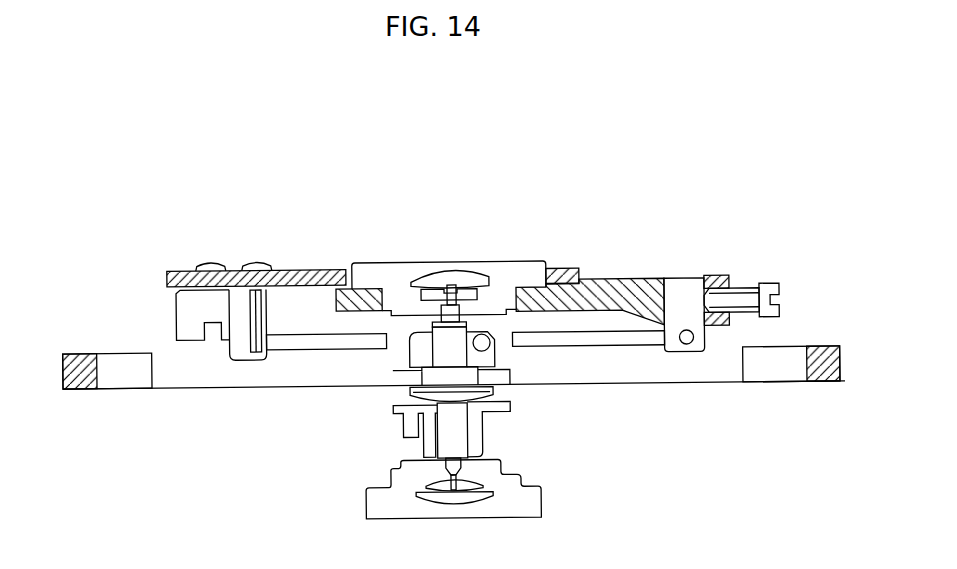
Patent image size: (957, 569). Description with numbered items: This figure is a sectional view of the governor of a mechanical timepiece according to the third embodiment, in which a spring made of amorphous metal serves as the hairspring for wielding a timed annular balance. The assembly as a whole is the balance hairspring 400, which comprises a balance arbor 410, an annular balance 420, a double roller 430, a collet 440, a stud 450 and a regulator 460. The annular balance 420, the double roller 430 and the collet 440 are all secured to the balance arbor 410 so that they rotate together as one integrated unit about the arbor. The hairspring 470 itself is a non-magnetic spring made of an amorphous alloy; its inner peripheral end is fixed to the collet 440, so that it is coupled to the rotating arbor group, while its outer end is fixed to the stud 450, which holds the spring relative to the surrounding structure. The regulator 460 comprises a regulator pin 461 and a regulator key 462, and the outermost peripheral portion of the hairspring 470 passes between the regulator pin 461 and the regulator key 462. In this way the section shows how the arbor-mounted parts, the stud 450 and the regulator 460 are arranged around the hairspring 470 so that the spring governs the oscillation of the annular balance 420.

The balance hairspring 400 is at (710, 243).
The balance arbor 410 is at (453, 303).
The annular balance 420 is at (85, 380).
The double roller 430 is at (480, 425).
The collet 440 is at (405, 347).
The stud 450 is at (700, 352).
The regulator 460 is at (180, 270).
The regulator pin 461 is at (242, 303).
The regulator key 462 is at (207, 313).
The hairspring 470 is at (607, 337).